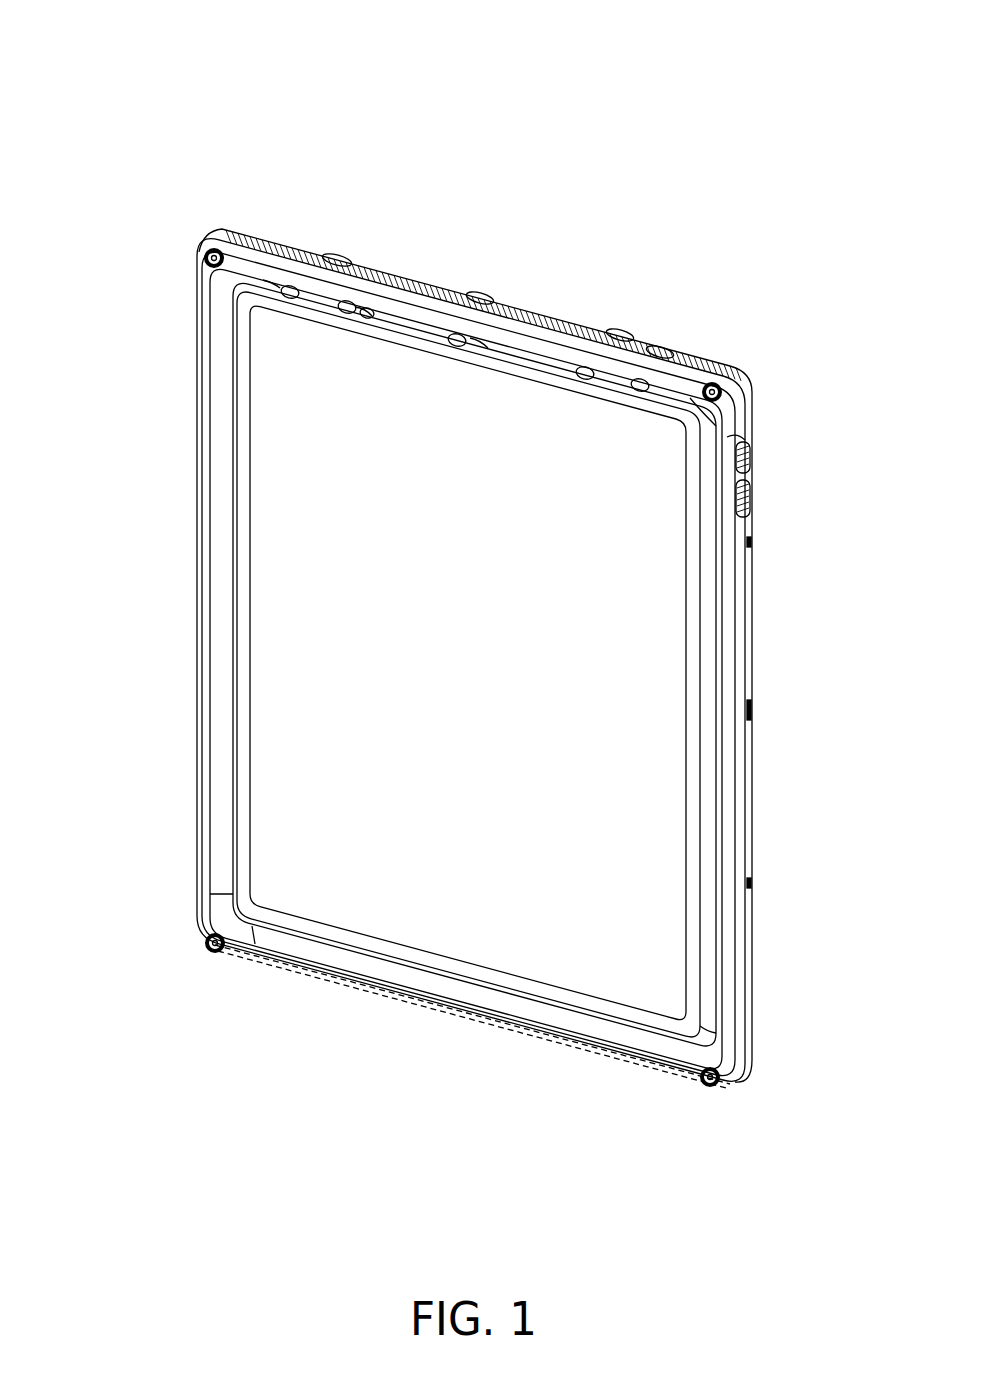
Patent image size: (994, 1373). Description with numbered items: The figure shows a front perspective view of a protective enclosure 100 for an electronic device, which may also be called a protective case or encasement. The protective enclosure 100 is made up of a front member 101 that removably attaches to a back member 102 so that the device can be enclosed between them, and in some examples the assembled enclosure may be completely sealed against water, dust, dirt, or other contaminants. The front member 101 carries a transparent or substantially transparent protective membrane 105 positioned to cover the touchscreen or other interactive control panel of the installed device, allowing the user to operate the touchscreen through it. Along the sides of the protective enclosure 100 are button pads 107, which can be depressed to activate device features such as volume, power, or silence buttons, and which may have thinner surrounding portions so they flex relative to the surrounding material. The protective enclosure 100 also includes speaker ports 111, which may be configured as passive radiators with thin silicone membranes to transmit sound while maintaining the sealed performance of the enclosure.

The protective enclosure 100 is at (582, 112).
The front member 101 is at (198, 493).
The back member 102 is at (757, 684).
The protective membrane 105 is at (565, 870).
The button pads 107 is at (750, 498).
The speaker ports 111 is at (357, 258).